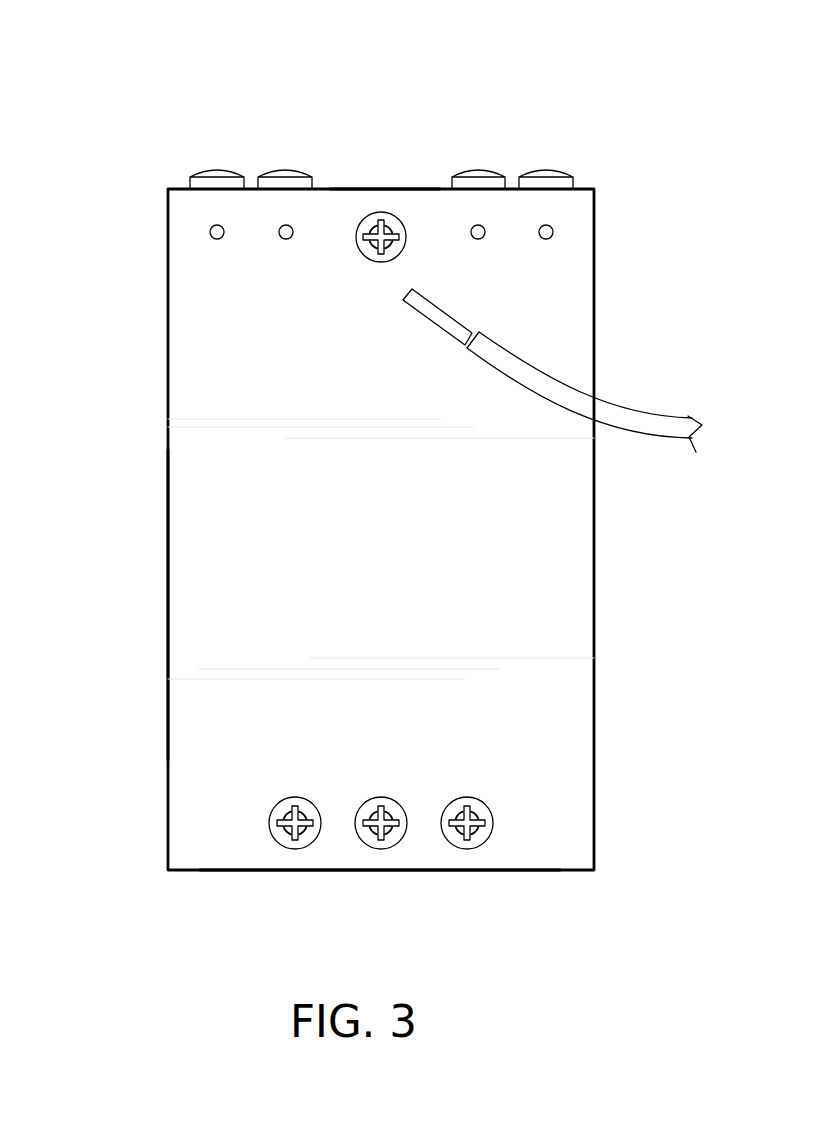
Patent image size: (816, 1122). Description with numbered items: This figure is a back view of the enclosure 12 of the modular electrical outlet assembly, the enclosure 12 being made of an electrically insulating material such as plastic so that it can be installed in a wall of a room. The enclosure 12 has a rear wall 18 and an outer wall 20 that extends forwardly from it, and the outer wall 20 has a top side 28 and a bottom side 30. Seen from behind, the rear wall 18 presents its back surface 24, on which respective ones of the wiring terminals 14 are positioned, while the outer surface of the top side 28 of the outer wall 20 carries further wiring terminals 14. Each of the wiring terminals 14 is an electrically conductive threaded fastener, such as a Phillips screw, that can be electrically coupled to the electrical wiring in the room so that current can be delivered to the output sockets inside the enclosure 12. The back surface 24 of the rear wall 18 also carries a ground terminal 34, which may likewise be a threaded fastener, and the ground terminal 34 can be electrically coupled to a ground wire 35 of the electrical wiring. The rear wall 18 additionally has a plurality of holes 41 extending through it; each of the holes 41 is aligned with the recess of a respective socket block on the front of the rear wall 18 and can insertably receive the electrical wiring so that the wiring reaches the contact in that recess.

The enclosure 12 is at (168, 189).
The wiring terminals 14 is at (283, 172).
The rear wall 18 is at (232, 461).
The outer wall 20 is at (168, 603).
The back surface 24 is at (247, 665).
The top side 28 is at (383, 189).
The bottom side 30 is at (238, 870).
The ground terminal 34 is at (368, 222).
The ground wire 35 is at (660, 430).
The holes 41 is at (279, 238).